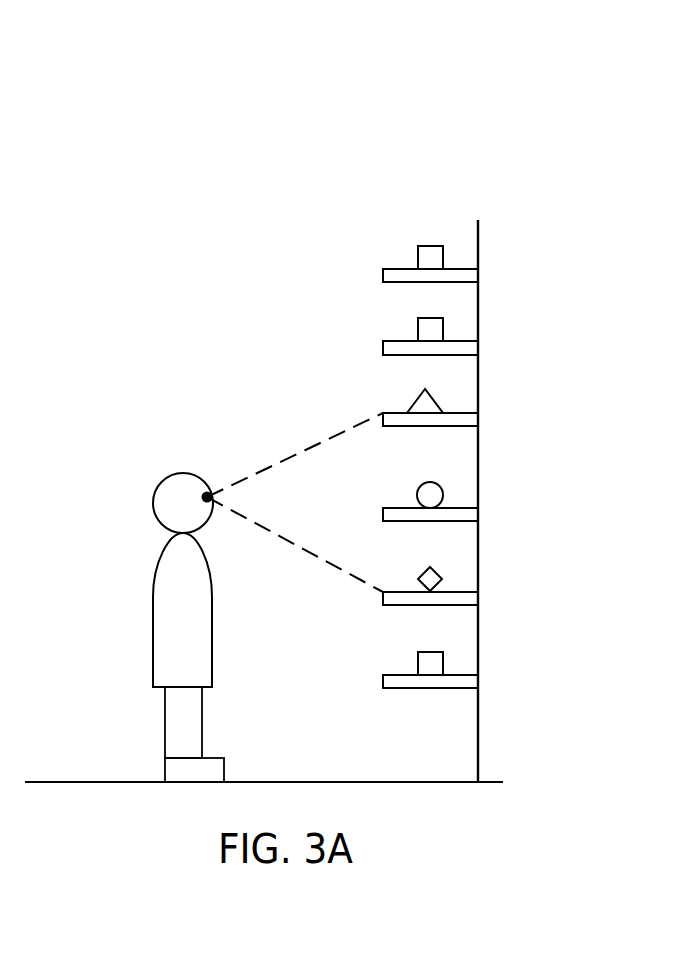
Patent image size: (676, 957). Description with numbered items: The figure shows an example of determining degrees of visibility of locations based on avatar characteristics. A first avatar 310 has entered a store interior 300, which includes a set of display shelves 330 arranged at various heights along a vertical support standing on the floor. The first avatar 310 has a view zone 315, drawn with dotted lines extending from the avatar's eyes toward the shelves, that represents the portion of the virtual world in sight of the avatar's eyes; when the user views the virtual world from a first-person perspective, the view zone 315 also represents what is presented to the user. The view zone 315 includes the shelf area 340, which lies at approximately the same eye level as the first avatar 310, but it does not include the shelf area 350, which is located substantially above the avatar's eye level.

The store interior 300 is at (326, 120).
The first avatar 310 is at (154, 498).
The view zone 315 is at (320, 446).
The display shelves 330 is at (372, 210).
The shelf area 340 is at (501, 425).
The shelf area 350 is at (501, 233).